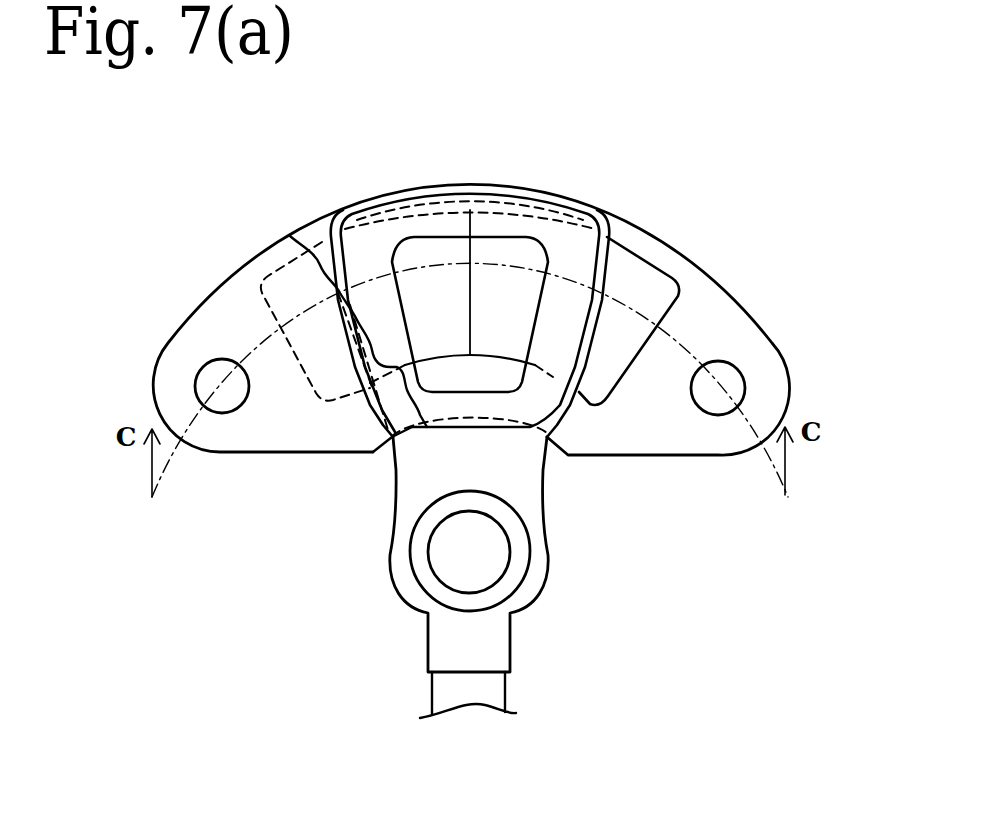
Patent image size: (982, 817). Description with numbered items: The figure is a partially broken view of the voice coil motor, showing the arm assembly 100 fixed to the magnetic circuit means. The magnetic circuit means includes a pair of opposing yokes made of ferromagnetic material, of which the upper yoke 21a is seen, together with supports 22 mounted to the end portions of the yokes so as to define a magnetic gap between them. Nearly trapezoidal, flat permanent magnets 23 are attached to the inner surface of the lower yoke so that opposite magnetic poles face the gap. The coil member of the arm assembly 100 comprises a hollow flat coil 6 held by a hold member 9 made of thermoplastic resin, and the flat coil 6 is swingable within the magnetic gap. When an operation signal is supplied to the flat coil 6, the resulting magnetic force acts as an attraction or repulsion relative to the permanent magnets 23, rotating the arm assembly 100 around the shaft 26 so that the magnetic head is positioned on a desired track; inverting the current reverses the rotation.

The flat coil 6 is at (508, 225).
The hold member 9 is at (621, 227).
The yoke 21a is at (233, 297).
The support 22 is at (207, 377).
The permanent magnet 23 is at (625, 277).
The shaft 26 is at (498, 552).
The arm assembly 100 is at (357, 563).